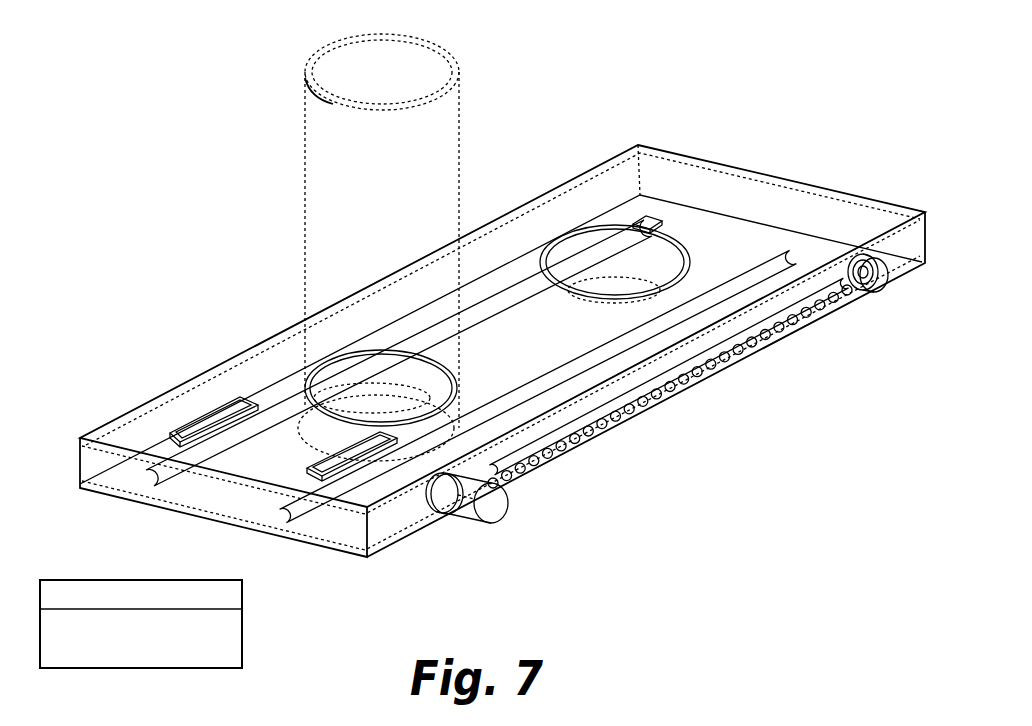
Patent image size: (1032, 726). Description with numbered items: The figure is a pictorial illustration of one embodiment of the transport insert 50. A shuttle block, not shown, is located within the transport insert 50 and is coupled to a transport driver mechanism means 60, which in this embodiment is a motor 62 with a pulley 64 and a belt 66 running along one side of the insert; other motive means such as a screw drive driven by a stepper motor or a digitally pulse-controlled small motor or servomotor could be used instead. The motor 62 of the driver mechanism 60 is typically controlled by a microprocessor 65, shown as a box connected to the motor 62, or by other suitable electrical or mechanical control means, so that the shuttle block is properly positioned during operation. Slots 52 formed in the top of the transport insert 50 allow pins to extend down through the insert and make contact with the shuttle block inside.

The transport insert 50 is at (526, 344).
The slots 52 is at (352, 442).
The transport driver mechanism means 60 is at (653, 414).
The motor 62 is at (508, 492).
The pulley 64 is at (882, 288).
The microprocessor 65 is at (471, 518).
The belt 66 is at (744, 373).